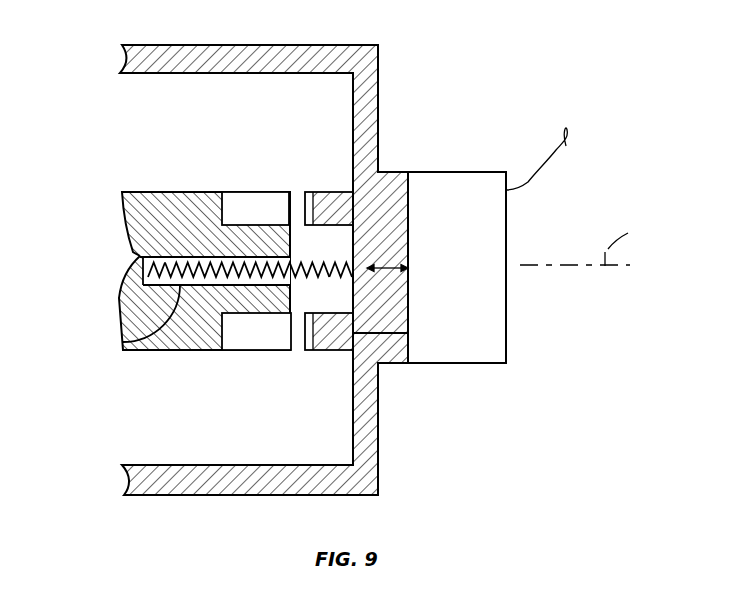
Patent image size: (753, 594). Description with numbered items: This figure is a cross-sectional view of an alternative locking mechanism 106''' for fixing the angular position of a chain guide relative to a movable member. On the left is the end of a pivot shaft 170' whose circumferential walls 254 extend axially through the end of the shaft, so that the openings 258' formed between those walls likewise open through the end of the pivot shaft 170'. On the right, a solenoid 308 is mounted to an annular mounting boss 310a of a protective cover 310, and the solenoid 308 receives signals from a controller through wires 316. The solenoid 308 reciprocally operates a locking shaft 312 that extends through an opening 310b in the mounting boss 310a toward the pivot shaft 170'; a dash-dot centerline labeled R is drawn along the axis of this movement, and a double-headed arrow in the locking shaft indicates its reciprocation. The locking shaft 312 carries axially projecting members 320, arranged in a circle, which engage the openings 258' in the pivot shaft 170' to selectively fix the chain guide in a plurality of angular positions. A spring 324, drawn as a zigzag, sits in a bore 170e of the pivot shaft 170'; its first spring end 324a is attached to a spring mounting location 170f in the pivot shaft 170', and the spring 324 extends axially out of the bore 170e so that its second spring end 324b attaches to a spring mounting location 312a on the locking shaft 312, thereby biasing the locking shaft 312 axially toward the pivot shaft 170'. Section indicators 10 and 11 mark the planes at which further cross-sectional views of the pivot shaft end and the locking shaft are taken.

The protective cover 310 is at (378, 66).
The annular mounting boss 310a is at (392, 365).
The opening 310b is at (390, 316).
The locking shaft 312 is at (387, 230).
The spring mounting location 312a is at (353, 258).
The solenoid 308 is at (468, 182).
The wires 316 is at (528, 182).
The axis of rotation R is at (585, 246).
The locking mechanism 106''' is at (487, 104).
The axially projecting members 320 is at (307, 192).
The pivot shaft 170' is at (186, 257).
The bore 170e is at (122, 340).
The spring mounting location 170f is at (123, 296).
The circumferential walls 254 is at (227, 200).
The openings 258' is at (237, 244).
The spring 324 is at (202, 287).
The first spring end 324a is at (137, 253).
The second spring end 324b is at (334, 284).
The section line 10- 10 is at (253, 274).
The section line 11- 11 is at (329, 274).